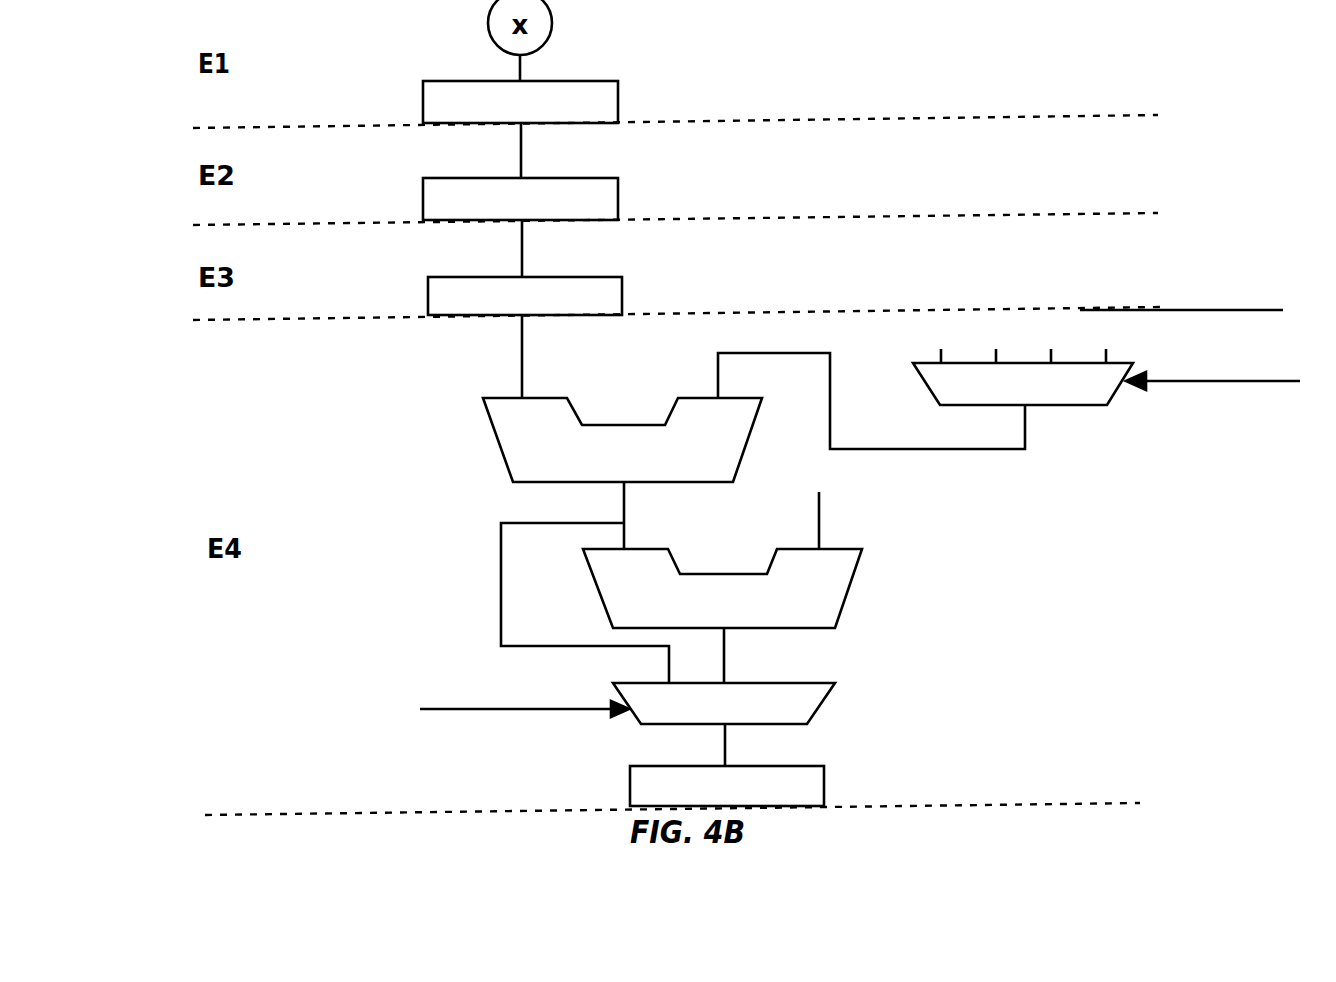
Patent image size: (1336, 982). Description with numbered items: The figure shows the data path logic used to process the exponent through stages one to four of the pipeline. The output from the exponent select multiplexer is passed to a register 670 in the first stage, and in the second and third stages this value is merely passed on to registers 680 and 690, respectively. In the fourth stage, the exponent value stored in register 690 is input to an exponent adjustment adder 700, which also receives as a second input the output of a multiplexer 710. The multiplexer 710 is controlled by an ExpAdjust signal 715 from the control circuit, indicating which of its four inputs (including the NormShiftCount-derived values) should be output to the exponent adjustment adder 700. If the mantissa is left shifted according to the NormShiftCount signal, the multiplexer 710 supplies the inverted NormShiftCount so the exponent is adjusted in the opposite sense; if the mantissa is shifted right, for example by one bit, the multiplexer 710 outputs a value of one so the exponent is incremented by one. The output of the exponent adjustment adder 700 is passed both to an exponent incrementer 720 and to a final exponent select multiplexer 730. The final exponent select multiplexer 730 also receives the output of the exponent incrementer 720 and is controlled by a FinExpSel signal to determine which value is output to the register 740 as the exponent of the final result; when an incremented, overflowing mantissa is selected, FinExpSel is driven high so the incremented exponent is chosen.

The register 670 is at (567, 80).
The register 680 is at (558, 177).
The register 690 is at (567, 276).
The exponent adjustment adder 700 is at (540, 396).
The multiplexer 710 is at (1032, 405).
The ExpAdjust signal 715 is at (1142, 379).
The exponent incrementer 720 is at (637, 548).
The final exponent select multiplexer 730 is at (747, 682).
The register 740 is at (825, 777).